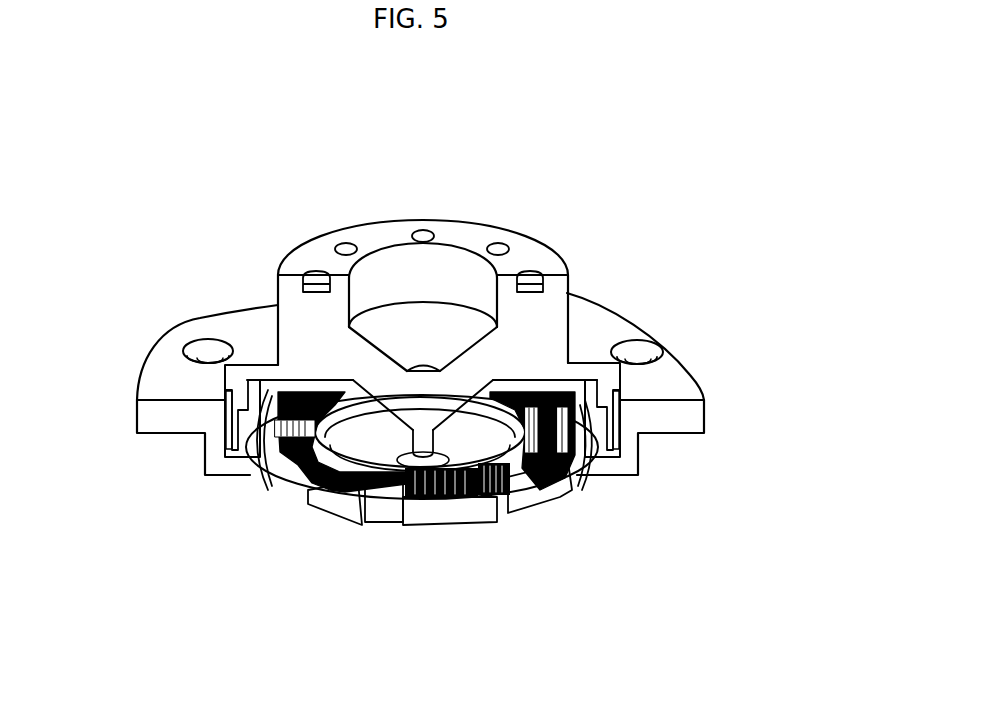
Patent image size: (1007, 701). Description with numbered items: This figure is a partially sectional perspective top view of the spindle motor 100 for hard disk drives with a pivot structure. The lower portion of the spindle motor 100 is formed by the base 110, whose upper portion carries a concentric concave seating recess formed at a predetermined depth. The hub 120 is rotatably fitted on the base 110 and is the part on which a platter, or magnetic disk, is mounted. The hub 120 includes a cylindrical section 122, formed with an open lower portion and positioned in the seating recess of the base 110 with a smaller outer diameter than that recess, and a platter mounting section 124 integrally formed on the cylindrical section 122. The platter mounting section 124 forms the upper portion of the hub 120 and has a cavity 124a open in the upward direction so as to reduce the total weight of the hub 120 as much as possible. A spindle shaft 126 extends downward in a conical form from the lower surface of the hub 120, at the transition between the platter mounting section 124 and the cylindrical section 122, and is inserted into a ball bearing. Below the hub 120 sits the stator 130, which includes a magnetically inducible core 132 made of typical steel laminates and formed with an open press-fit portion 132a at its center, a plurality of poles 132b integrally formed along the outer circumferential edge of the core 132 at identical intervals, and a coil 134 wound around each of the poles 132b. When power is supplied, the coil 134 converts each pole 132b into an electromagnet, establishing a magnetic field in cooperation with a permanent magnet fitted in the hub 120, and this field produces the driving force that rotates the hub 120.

The spindle motor 100 is at (250, 247).
The base 110 is at (621, 490).
The hub 120 is at (568, 316).
The cylindrical section 122 is at (622, 422).
The platter mounting section 124 is at (570, 293).
The cavity 124a is at (420, 308).
The spindle shaft 126 is at (463, 493).
The stator 130 is at (322, 503).
The core 132 is at (362, 485).
The open press-fit portion 132a is at (265, 457).
The poles 132b is at (537, 500).
The coil 134 is at (412, 497).